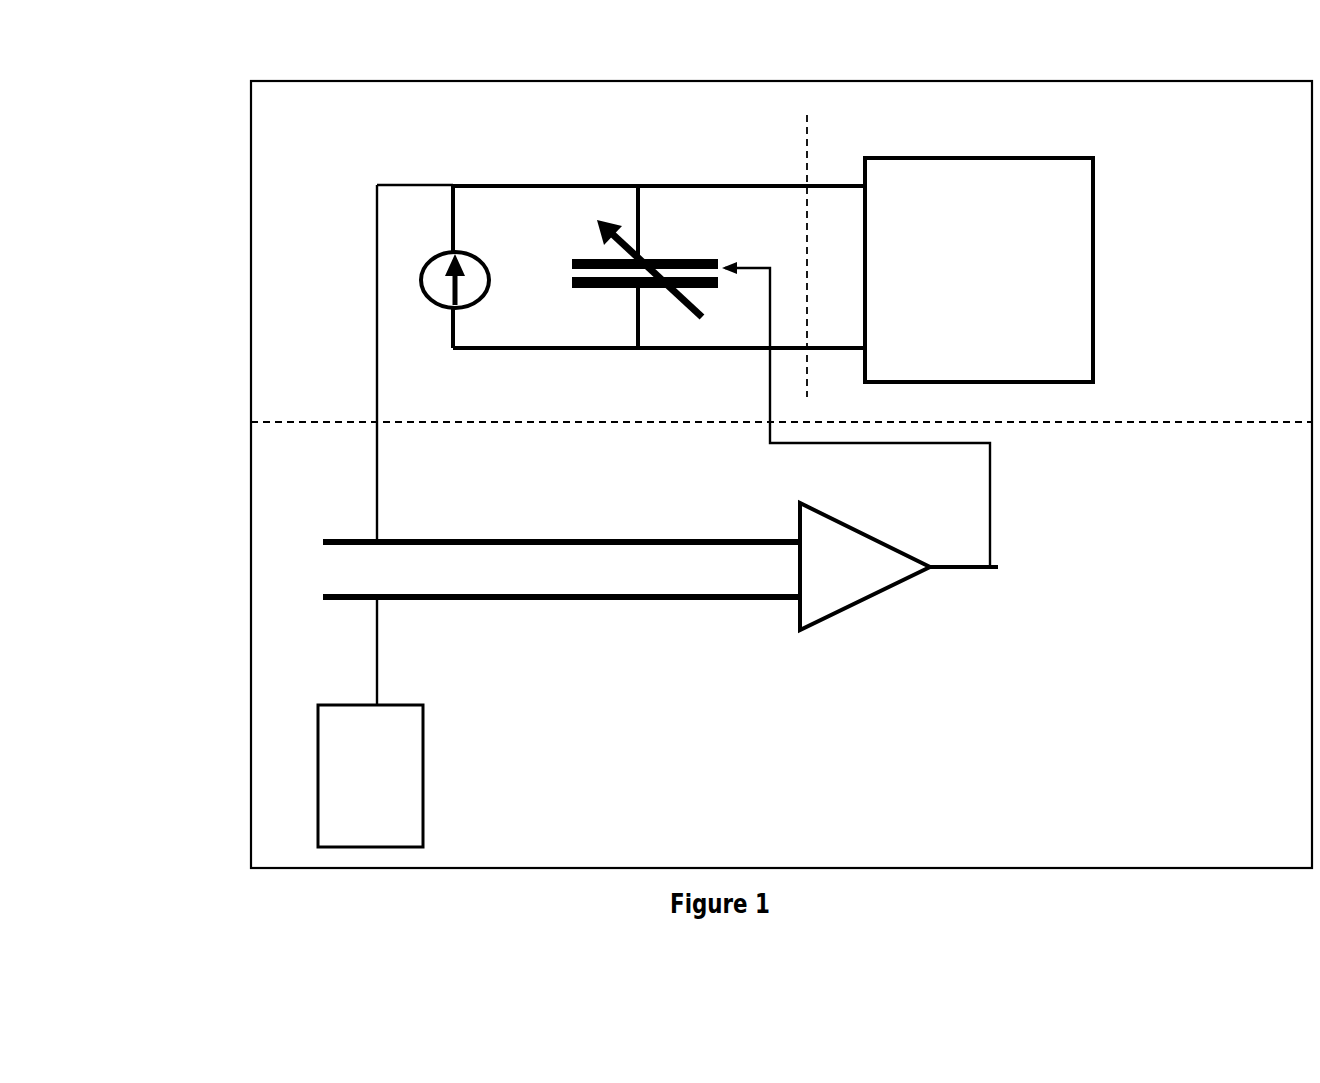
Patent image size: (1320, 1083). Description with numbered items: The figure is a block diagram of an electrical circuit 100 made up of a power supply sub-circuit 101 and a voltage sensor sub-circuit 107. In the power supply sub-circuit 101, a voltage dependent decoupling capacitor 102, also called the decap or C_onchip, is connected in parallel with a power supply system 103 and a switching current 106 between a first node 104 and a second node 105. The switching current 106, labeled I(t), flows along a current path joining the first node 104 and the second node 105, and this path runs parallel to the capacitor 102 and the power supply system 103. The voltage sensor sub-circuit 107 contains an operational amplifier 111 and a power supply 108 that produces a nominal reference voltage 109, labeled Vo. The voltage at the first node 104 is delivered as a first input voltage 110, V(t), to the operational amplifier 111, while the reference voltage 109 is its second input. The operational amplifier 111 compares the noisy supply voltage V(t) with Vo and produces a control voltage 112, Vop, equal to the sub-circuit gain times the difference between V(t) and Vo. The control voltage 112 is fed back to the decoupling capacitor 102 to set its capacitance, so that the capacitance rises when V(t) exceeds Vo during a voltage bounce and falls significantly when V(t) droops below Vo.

The circuit 100 is at (720, 268).
The power supply sub-circuit 101 is at (690, 105).
The voltage dependent decoupling capacitor 102 is at (597, 207).
The power supply system 103 is at (1072, 252).
The first node 104 is at (447, 170).
The second node 105 is at (443, 353).
The switching current 106 is at (422, 277).
The voltage sensor sub-circuit 107 is at (295, 633).
The power supply 108 is at (425, 778).
The nominal reference voltage 109 is at (712, 602).
The first input voltage 110 is at (758, 553).
The operational amplifier 111 is at (875, 602).
The control voltage 112 is at (1002, 547).